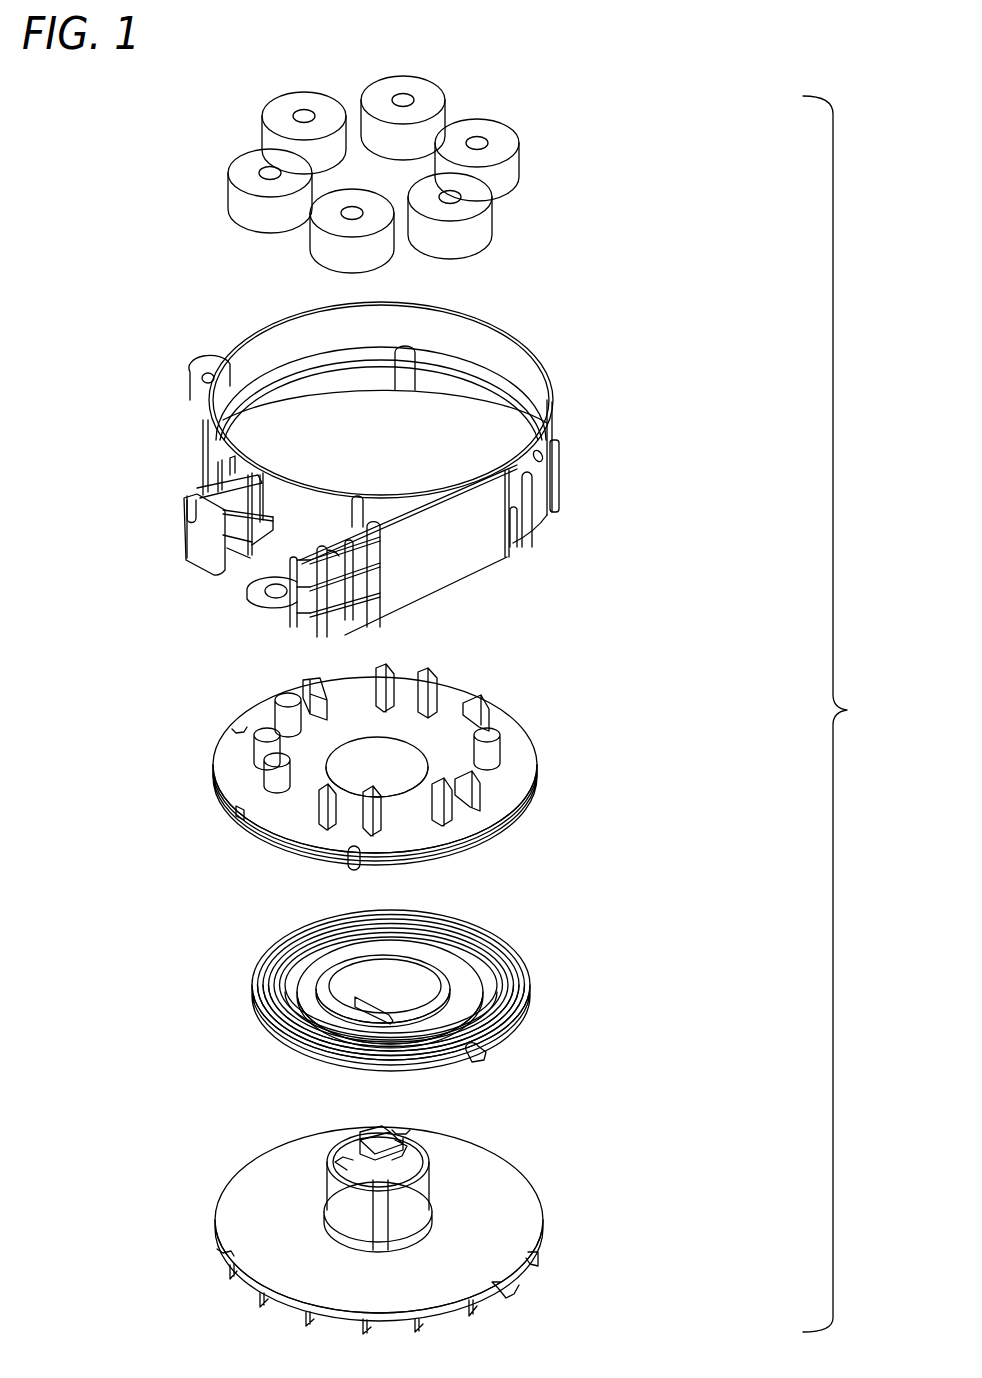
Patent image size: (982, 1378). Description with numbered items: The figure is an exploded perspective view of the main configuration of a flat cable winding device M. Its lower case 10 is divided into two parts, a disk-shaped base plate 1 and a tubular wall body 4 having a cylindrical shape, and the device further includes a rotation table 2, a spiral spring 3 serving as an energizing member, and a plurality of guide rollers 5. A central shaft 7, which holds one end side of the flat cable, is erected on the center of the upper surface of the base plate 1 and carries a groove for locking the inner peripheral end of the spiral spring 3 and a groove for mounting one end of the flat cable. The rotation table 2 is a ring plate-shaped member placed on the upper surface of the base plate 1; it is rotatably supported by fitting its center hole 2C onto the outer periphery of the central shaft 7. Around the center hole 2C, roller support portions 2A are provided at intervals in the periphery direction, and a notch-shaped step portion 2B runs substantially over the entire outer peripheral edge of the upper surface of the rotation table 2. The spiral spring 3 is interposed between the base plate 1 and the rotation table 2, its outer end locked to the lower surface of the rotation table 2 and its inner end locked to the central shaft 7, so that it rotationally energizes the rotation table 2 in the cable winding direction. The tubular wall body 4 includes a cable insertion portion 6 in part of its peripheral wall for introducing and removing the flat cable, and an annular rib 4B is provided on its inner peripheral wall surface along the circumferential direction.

The base plate 1 is at (454, 1197).
The rotation table 2 is at (389, 734).
The roller support portion 2A is at (252, 746).
The notch-shaped step portion 2B is at (532, 800).
The center hole 2C is at (428, 746).
The spiral spring 3 is at (525, 948).
The tubular wall body 4 is at (431, 457).
The rib 4B is at (543, 397).
The guide rollers 5 is at (522, 156).
The cable insertion portion 6 is at (247, 582).
The central shaft 7 is at (425, 1142).
The lower case 10 is at (698, 250).
The flat cable winding device M is at (170, 362).